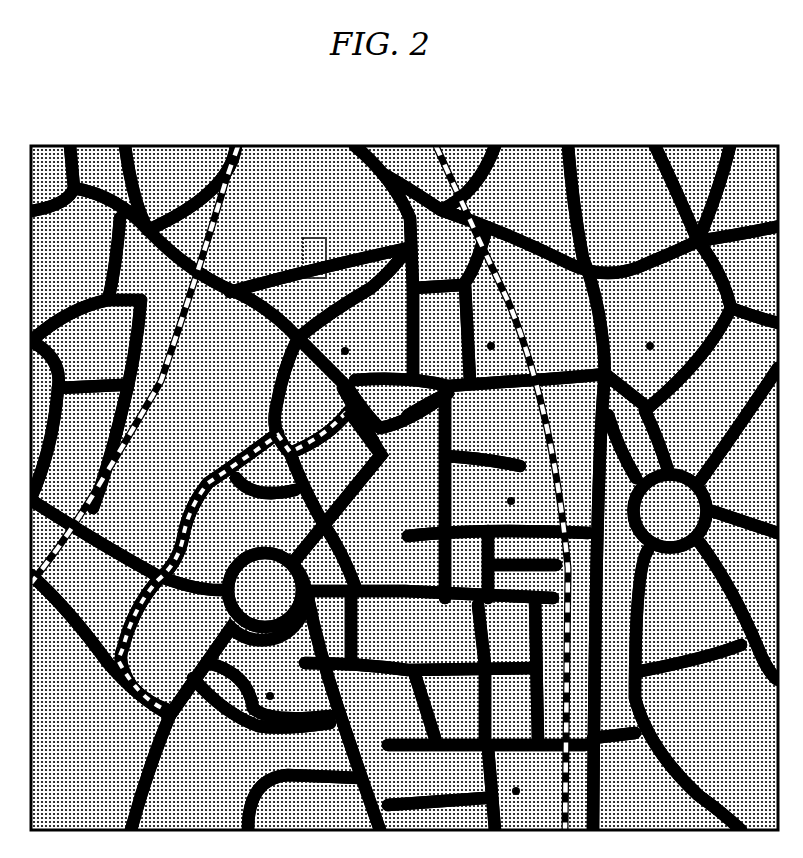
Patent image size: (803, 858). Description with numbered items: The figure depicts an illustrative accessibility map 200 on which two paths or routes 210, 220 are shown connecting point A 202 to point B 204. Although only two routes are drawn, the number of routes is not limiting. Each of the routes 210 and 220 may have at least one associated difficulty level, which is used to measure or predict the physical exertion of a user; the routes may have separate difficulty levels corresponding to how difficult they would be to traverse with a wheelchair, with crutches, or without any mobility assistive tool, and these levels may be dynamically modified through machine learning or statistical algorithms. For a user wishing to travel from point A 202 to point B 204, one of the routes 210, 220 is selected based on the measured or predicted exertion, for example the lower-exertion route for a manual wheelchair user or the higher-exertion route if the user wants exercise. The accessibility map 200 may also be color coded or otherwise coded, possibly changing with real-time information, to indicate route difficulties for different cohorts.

The accessibility map 200 is at (667, 138).
The point A 202 is at (180, 717).
The point B 204 is at (353, 388).
The route 210 is at (150, 568).
The route 220 is at (303, 566).